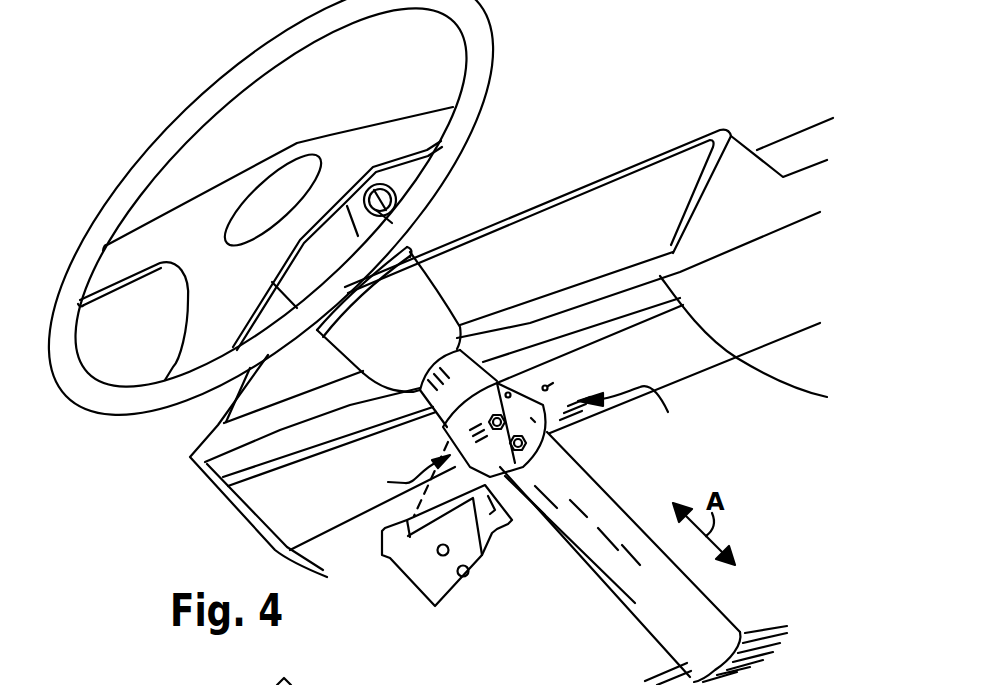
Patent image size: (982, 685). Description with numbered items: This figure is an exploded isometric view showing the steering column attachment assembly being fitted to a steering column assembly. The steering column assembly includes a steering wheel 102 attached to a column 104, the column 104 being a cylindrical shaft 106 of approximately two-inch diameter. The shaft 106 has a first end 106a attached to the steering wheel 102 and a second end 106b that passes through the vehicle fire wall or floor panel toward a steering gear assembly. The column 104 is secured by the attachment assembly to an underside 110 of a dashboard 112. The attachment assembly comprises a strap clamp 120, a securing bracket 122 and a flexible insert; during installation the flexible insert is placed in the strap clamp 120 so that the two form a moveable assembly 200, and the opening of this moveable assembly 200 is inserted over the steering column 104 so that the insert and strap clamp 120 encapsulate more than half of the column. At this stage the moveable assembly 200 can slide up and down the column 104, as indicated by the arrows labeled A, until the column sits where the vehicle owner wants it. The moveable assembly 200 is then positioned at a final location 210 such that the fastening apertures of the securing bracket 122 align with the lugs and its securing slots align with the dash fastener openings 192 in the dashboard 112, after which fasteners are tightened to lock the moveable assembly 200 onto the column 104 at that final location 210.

The steering wheel 102 is at (480, 68).
The column 104 is at (596, 572).
The cylindrical shaft 106 is at (686, 607).
The first end 106a is at (456, 338).
The second end 106b is at (740, 632).
The underside 110 is at (697, 361).
The dashboard 112 is at (674, 141).
The strap clamp 120 is at (548, 432).
The securing bracket 122 is at (490, 550).
The dash fastener openings 192 is at (549, 388).
The moveable assembly 200 is at (397, 473).
The final location 210 is at (644, 407).